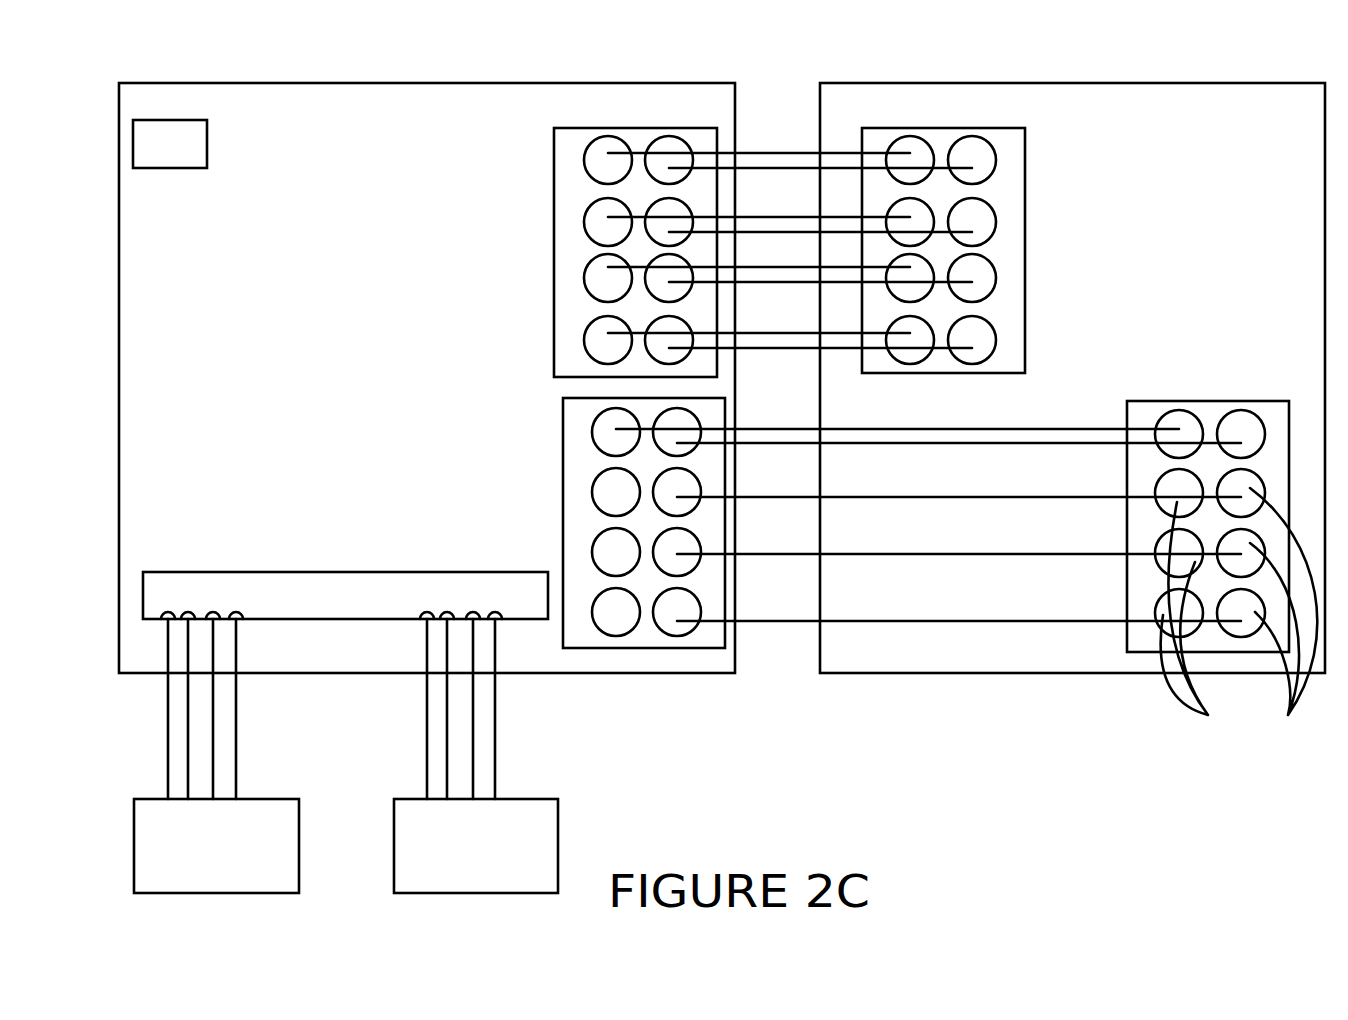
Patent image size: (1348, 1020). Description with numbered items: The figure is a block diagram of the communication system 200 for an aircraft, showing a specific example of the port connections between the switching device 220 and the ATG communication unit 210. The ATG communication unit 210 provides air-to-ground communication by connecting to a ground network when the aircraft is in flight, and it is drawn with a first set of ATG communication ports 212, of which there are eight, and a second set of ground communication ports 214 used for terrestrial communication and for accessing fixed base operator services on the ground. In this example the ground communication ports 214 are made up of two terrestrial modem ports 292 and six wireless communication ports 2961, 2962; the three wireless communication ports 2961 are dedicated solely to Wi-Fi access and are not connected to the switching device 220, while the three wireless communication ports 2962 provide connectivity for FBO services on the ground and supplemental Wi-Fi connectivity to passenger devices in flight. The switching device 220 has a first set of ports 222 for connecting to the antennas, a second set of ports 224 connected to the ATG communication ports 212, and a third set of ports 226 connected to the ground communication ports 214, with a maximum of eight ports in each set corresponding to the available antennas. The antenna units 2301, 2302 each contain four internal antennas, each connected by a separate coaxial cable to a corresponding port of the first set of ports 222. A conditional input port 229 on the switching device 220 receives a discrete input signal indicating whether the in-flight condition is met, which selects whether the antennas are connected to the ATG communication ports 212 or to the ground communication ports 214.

The communication system 200 is at (205, 60).
The ATG communication unit 210 is at (1223, 97).
The ATG communication ports 212 is at (998, 130).
The ground communication ports 214 is at (1218, 403).
The switching device 220 is at (562, 88).
The first set of ports 222 is at (293, 571).
The second set of ports 224 is at (562, 127).
The third set of ports 226 is at (567, 415).
The conditional input port 229 is at (140, 118).
The antenna unit 2301 is at (273, 792).
The antenna unit 2302 is at (532, 792).
The terrestrial modem ports 292 is at (1230, 430).
The wireless communication ports 2961 is at (1206, 632).
The wireless communication ports 2962 is at (1299, 625).